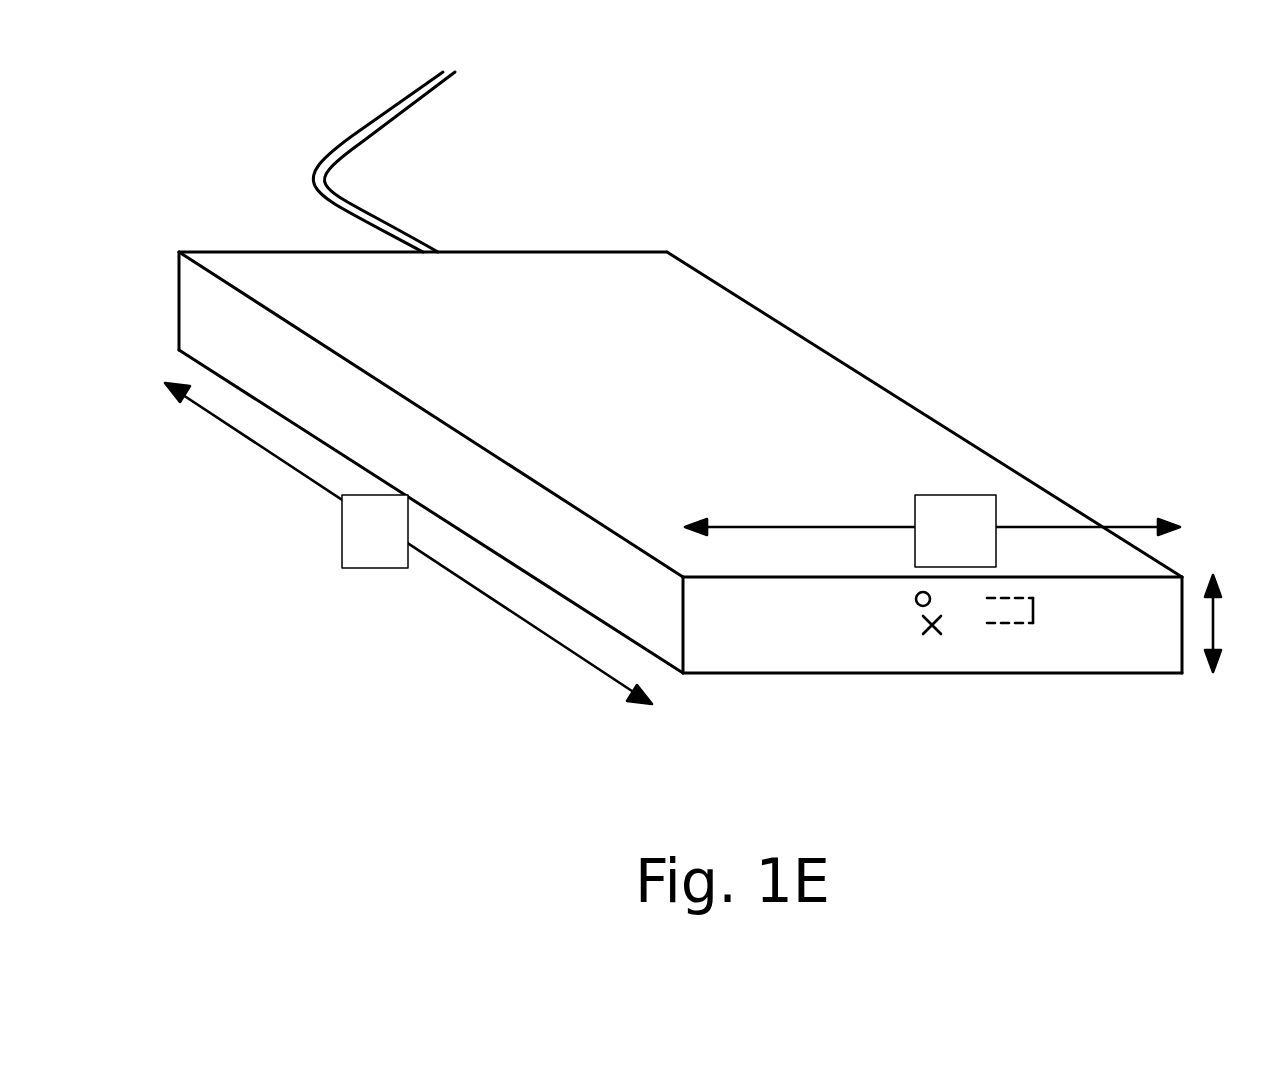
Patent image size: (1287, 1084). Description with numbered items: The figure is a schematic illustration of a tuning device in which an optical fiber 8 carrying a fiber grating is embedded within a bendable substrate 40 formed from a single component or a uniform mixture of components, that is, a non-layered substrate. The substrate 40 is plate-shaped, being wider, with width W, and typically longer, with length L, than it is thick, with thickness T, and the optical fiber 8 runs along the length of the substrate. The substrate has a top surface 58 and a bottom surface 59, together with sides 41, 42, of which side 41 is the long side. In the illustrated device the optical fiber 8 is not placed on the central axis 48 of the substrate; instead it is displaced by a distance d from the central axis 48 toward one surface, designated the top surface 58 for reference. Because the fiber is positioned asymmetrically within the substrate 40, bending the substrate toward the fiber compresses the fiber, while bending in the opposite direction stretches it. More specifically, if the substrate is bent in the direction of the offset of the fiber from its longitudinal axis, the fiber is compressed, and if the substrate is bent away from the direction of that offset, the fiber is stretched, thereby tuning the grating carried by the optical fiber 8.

The optical fiber 8 is at (328, 186).
The bendable substrate 40 is at (680, 476).
The long side 41 is at (555, 545).
The side 42 is at (783, 627).
The central axis 48 is at (944, 626).
The top surface 58 is at (863, 414).
The bottom surface 59 is at (327, 445).
The distance d is at (1036, 605).
The length L is at (408, 543).
The width W is at (932, 531).
The thickness T is at (1233, 623).